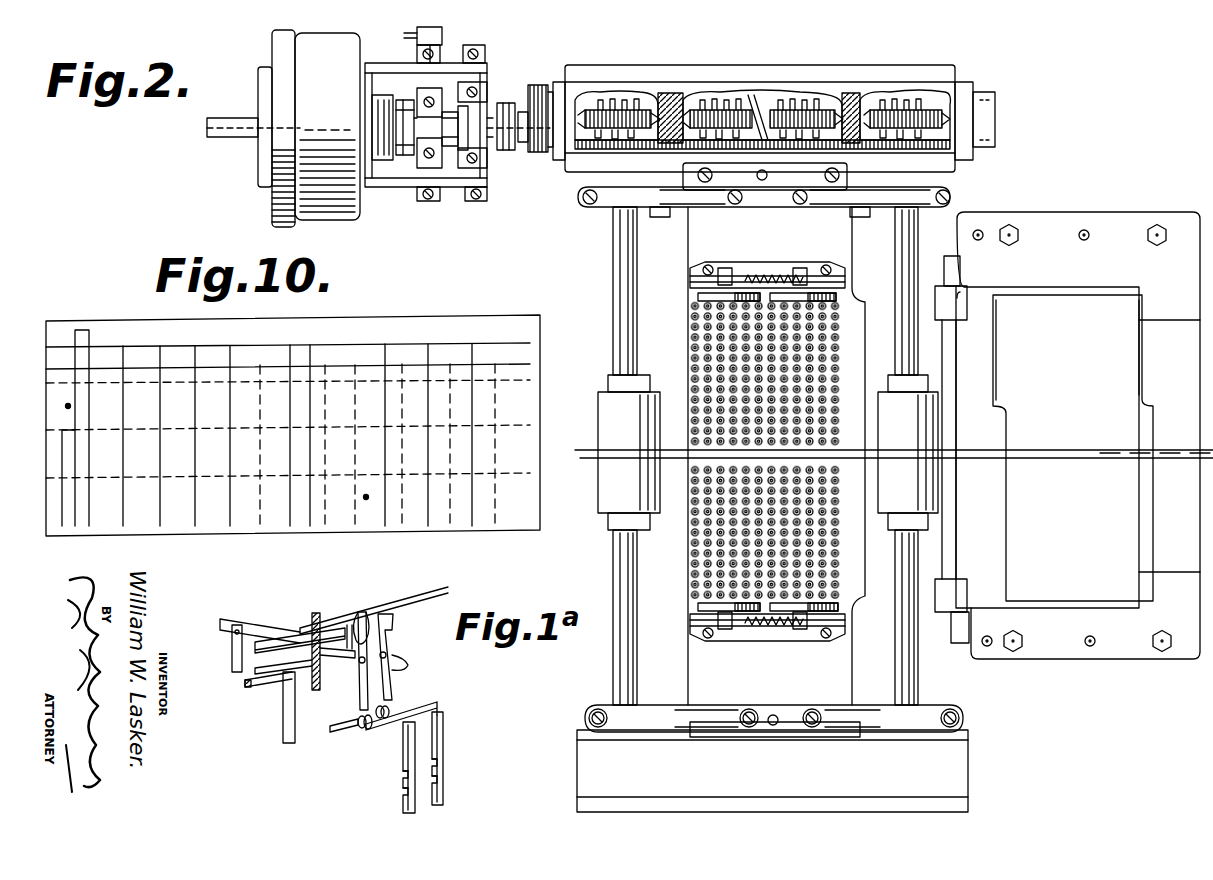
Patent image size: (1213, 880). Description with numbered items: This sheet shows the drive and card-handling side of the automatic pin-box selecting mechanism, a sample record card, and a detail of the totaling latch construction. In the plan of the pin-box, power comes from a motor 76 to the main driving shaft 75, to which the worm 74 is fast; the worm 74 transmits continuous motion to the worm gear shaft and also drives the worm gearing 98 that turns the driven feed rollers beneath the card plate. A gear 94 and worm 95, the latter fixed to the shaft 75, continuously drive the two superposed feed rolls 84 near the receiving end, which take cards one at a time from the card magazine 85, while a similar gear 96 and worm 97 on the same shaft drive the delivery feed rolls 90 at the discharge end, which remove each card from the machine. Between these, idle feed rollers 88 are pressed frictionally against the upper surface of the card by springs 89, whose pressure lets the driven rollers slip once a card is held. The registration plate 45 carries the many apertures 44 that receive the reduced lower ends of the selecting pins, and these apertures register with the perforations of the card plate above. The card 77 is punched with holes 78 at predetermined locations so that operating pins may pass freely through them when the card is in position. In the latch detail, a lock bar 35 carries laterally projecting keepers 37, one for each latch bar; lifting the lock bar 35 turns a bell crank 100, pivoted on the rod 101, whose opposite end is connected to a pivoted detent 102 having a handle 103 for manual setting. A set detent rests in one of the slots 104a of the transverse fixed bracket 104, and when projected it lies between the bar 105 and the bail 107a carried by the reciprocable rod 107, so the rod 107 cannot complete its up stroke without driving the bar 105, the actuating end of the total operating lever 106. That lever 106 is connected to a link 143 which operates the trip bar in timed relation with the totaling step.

In FIG. 2, the motor 76 is at (283, 128).
In FIG. 2, the main driving shaft 75 is at (520, 100).
In FIG. 2, the gear 96 is at (612, 100).
In FIG. 2, the worm 97 is at (619, 97).
In FIG. 2, the worm gearing 98 is at (718, 108).
In FIG. 2, the worm 74 is at (760, 130).
In FIG. 2, the worm 95 is at (888, 103).
In FIG. 2, the gear 94 is at (908, 110).
In FIG. 2, the registration plate 45 is at (754, 456).
In FIG. 2, the apertures 44 is at (696, 347).
In FIG. 2, the springs 89 is at (762, 282).
In FIG. 2, the idle feed rollers 88 is at (698, 298).
In FIG. 2, the delivery feed rolls 90 is at (629, 456).
In FIG. 2, the feed rolls 84 is at (908, 456).
In FIG. 2, the card magazine 85 is at (1074, 435).
In FIG. 10, the card 77 is at (290, 528).
In FIG. 10, the holes 78 is at (368, 498).
In FIG. 1A, the bracket 104 is at (370, 603).
In FIG. 1A, the slots 104a is at (318, 642).
In FIG. 1A, the bar 105 is at (280, 638).
In FIG. 1A, the total operating lever 106 is at (222, 622).
In FIG. 1A, the link 143 is at (232, 655).
In FIG. 1A, the reciprocable rod 107 is at (283, 713).
In FIG. 1A, the bail 107a is at (246, 683).
In FIG. 1A, the detent 102 is at (393, 636).
In FIG. 1A, the handle 103 is at (382, 616).
In FIG. 1A, the bell crank 100 is at (340, 725).
In FIG. 1A, the rod 101 is at (344, 736).
In FIG. 1A, the lock bar 35 is at (403, 762).
In FIG. 1A, the keepers 37 is at (432, 781).